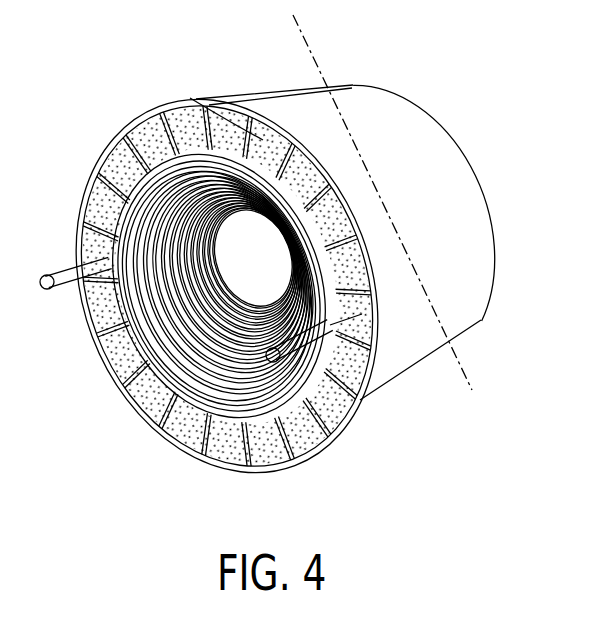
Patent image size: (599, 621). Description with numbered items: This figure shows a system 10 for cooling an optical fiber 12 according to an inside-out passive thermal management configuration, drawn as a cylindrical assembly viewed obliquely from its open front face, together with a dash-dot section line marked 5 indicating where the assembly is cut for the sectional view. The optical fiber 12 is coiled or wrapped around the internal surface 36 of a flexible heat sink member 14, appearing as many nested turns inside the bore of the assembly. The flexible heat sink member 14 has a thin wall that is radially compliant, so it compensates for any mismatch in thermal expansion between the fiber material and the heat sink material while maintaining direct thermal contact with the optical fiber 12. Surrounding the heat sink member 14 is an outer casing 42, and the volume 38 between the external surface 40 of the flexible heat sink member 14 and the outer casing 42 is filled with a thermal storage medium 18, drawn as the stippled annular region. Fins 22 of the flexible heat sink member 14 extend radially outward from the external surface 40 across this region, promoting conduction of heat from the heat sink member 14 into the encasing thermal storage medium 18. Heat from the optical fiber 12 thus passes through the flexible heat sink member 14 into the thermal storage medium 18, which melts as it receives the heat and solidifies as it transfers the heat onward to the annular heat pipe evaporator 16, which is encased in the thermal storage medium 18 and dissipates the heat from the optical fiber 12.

The section line for FIG. 5 is at (293, 15).
The system 10 is at (500, 84).
The optical fiber 12 is at (193, 398).
The flexible heat sink member 14 is at (130, 343).
The heat pipe evaporator 16 is at (50, 297).
The thermal storage medium 18 is at (370, 340).
The fins 22 is at (205, 135).
The internal surface 36 is at (233, 393).
The volume 38 is at (315, 428).
The external surface 40 is at (281, 432).
The outer casing 42 is at (352, 404).